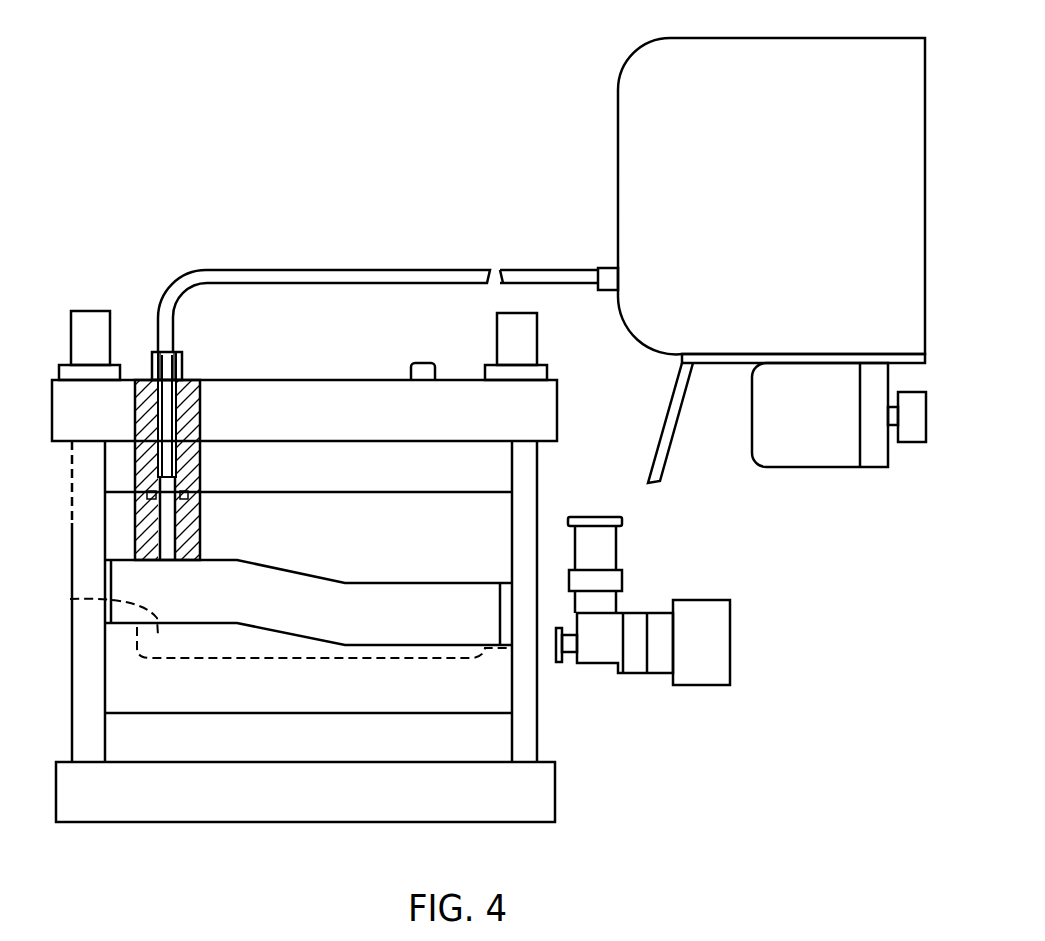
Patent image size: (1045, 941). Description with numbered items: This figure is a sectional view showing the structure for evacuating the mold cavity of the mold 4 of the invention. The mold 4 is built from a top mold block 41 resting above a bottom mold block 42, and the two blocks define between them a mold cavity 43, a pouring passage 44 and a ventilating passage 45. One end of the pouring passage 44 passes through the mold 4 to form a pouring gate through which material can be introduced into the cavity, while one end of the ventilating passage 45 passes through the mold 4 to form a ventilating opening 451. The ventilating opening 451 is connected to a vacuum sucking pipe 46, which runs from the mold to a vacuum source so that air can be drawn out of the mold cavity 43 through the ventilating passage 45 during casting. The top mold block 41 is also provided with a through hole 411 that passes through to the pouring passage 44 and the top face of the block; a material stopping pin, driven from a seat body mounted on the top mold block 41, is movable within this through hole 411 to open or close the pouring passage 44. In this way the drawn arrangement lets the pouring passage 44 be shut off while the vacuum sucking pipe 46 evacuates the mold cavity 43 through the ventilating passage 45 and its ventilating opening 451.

The mold 4 is at (64, 515).
The top mold block 41 is at (498, 518).
The through hole 411 is at (512, 645).
The bottom mold block 42 is at (485, 698).
The mold cavity 43 is at (70, 600).
The pouring passage 44 is at (497, 653).
The ventilating passage 45 is at (163, 525).
The ventilating opening 451 is at (175, 492).
The vacuum sucking pipe 46 is at (302, 277).